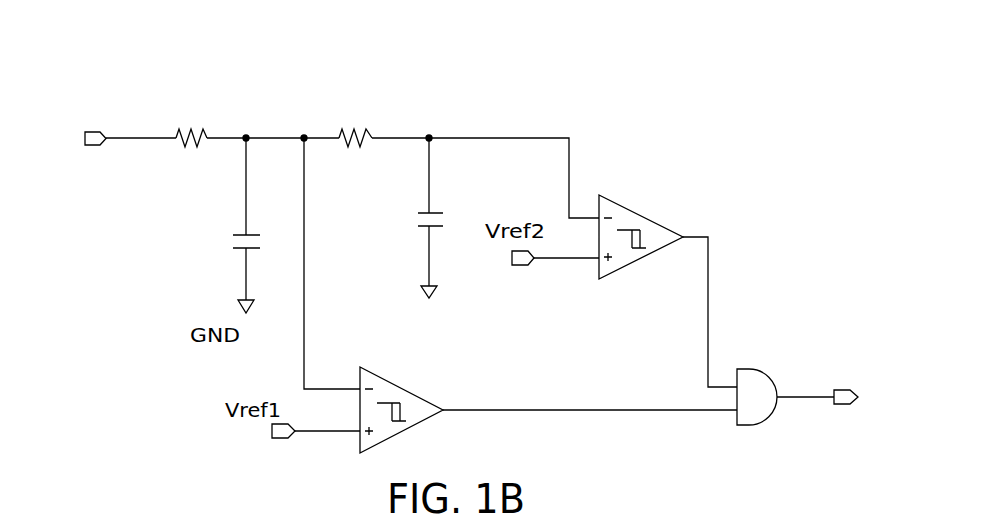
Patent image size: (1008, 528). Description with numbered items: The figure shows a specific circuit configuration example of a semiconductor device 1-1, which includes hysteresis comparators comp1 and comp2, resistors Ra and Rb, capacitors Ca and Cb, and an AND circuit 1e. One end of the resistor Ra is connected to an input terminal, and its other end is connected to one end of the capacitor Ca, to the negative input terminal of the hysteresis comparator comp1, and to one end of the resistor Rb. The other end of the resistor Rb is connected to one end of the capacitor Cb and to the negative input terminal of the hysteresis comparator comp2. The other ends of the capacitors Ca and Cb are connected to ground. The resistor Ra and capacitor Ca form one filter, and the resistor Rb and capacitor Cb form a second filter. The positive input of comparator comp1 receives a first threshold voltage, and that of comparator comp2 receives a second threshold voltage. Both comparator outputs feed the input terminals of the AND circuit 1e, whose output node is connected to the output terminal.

The semiconductor device 1-1 is at (443, 82).
The AND circuit 1e is at (757, 369).
The resistor Ra is at (192, 121).
The resistor Rb is at (355, 121).
The capacitor Ca is at (228, 225).
The capacitor Cb is at (409, 218).
The hysteresis comparator comp1 is at (420, 403).
The hysteresis comparator comp2 is at (659, 232).